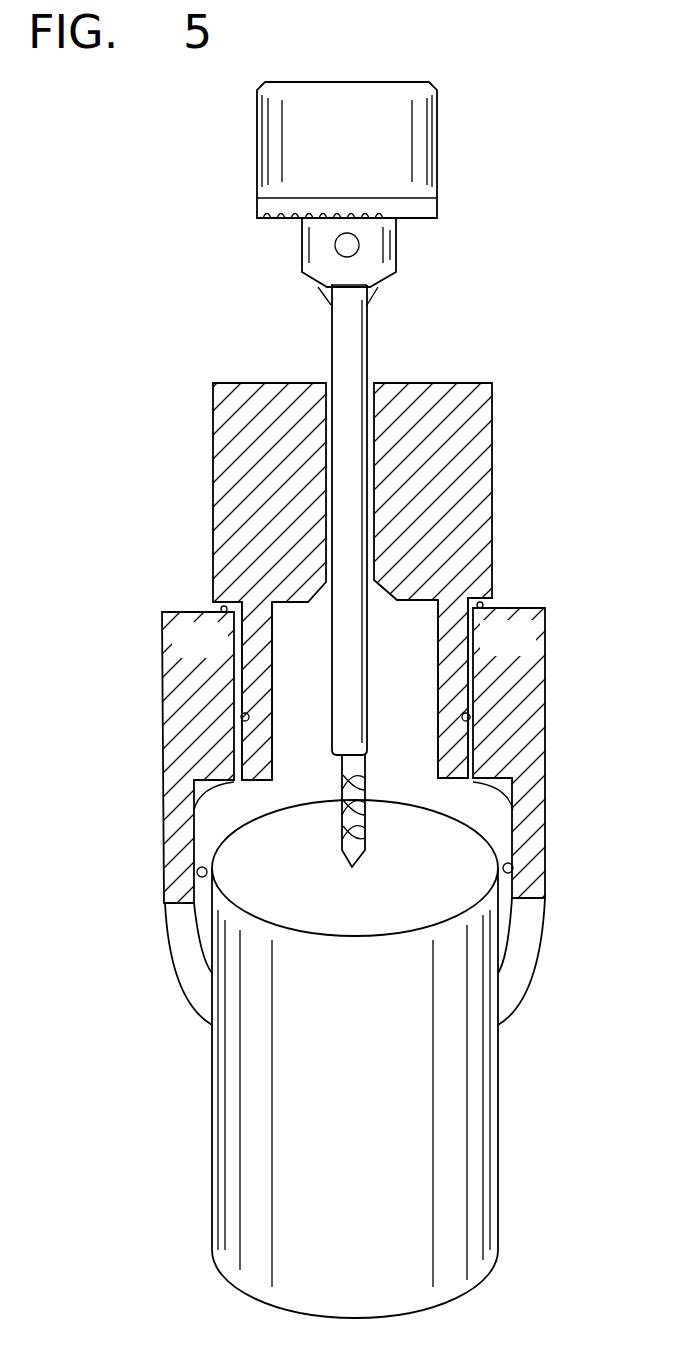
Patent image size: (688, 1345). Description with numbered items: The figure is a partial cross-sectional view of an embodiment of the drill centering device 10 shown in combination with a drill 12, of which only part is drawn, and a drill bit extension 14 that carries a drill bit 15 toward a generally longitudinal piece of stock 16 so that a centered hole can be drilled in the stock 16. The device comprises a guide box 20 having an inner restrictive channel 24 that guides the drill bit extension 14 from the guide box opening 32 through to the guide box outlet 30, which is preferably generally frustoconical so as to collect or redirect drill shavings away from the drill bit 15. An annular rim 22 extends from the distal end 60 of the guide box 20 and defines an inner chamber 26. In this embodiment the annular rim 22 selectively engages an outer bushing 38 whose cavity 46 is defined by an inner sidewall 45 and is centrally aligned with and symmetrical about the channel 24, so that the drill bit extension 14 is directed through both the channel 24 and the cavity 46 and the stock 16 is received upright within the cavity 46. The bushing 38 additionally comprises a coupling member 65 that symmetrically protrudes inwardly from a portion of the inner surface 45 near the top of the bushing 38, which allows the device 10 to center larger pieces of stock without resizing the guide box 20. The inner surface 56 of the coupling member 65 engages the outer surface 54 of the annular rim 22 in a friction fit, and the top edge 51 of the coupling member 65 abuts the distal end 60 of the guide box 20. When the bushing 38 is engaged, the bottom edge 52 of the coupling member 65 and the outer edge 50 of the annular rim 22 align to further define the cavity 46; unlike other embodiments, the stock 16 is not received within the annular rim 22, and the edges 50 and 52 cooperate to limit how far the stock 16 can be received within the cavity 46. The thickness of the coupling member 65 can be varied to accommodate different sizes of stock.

The drill centering device 10 is at (520, 255).
The drill 12 is at (420, 143).
The drill bit extension 14 is at (357, 327).
The drill bit 15 is at (357, 865).
The stock 16 is at (455, 1098).
The guide box 20 is at (473, 458).
The annular rim 22 is at (262, 717).
The inner restrictive channel 24 is at (330, 444).
The inner chamber 26 is at (302, 642).
The guide box outlet 30 is at (380, 597).
The guide box opening 32 is at (374, 378).
The bushing 38 is at (173, 762).
The inner sidewall 45 is at (197, 872).
The cavity 46 is at (205, 838).
The outer edge of annular rim 50 is at (455, 787).
The top edge 51 is at (190, 612).
The bottom edge 52 is at (189, 808).
The outer surface of annular rim 54 is at (245, 690).
The inner surface of coupling member 56 is at (241, 717).
The distal end 60 is at (213, 603).
The coupling member 65 is at (222, 654).